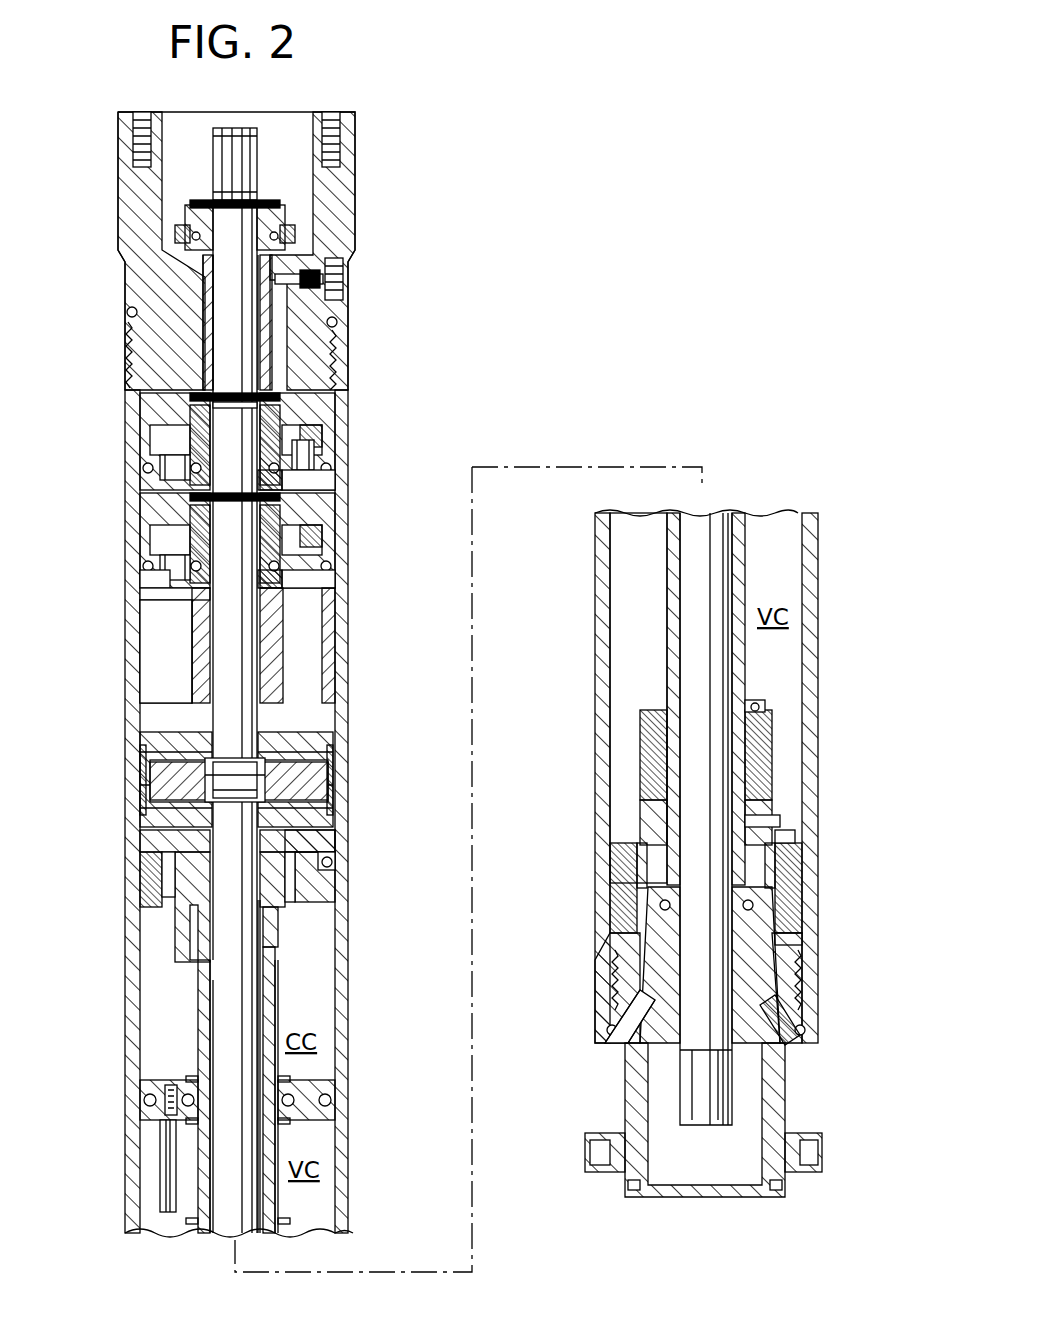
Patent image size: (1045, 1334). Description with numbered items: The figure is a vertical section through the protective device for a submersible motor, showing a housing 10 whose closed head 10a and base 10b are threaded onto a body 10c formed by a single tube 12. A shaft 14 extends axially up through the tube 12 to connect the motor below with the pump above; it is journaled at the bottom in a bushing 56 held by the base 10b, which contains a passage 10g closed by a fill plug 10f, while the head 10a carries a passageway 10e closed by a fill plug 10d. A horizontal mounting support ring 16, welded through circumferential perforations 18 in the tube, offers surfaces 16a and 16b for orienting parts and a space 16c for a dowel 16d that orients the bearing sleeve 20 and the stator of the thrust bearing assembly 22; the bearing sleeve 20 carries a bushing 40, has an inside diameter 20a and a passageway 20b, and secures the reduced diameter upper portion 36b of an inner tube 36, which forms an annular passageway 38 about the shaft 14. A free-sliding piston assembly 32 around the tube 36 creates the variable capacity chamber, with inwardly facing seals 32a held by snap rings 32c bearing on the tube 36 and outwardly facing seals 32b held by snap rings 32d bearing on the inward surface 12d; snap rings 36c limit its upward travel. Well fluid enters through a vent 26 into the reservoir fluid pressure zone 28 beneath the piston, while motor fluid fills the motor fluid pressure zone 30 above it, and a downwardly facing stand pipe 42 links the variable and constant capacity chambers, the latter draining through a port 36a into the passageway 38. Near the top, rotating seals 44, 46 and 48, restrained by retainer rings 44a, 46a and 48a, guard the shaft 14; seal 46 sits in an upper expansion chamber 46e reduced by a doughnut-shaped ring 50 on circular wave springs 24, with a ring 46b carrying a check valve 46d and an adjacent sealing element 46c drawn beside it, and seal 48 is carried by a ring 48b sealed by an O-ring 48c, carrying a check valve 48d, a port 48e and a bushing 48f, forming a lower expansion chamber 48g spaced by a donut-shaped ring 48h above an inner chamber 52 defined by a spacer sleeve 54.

The housing 10 is at (355, 240).
The closed head 10a is at (125, 290).
The base 10b is at (635, 1110).
The body 10c is at (350, 652).
The fill plug 10d is at (345, 276).
The passageway 10e is at (290, 312).
The fill plug 10f is at (790, 1050).
The passage 10g is at (800, 985).
The tube 12 is at (348, 740).
The inward surface 12d is at (150, 640).
The shaft 14 is at (255, 130).
The horizontal mounting support ring 16 is at (165, 910).
The surface 16a is at (140, 858).
The surface 16b is at (190, 930).
The space 16c is at (300, 930).
The dowel 16d is at (335, 830).
The circumferential perforations 18 is at (135, 885).
The bearing sleeve 20 is at (145, 832).
The inside diameter 20a is at (195, 950).
The passageway 20b is at (335, 855).
The thrust bearing assembly 22 is at (145, 775).
The circular wave springs 24 is at (310, 455).
The vent 26 is at (620, 1075).
The reservoir fluid pressure zone 28 is at (640, 855).
The motor fluid pressure zone 30 is at (635, 607).
The piston assembly 32 is at (640, 770).
The inwardly facing seals 32a is at (645, 735).
The outwardly facing seals 32b is at (615, 890).
The snap rings 32c is at (760, 700).
The snap rings 32d is at (780, 845).
The tube 36 is at (280, 1135).
The port 36a is at (215, 990).
The reduced diameter upper portion 36b is at (280, 970).
The snap rings 36c is at (280, 1210).
The annular passageway 38 is at (235, 1235).
The bushing 40 is at (290, 950).
The stand pipe 42 is at (165, 1180).
The rotating seal 44 is at (200, 218).
The retainer ring 44a is at (210, 203).
The rotating seal 46 is at (150, 440).
The retainer ring 46a is at (190, 398).
The ring 46b is at (150, 462).
The cartridge ring 46c is at (300, 505).
The check valve 46d is at (320, 482).
The upper expansion chamber 46e is at (290, 400).
The rotating seal 48 is at (150, 535).
The retainer ring 48a is at (190, 498).
The ring 48b is at (150, 575).
The O-ring 48c is at (300, 595).
The check valve 48d is at (320, 570).
The port 48e is at (175, 605).
The bushing 48f is at (150, 680).
The lower expansion chamber 48g is at (315, 530).
The donut-shaped ring 48h is at (150, 553).
The doughnut-shaped ring 50 is at (315, 425).
The inner chamber 52 is at (300, 675).
The spacer sleeve 54 is at (330, 705).
The bushing 56 is at (650, 975).